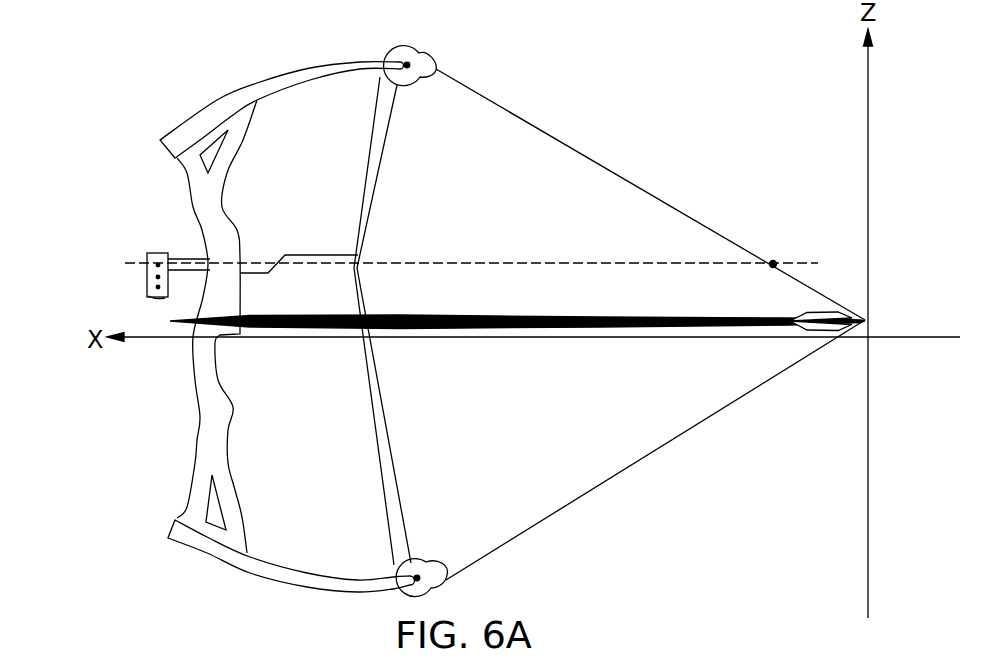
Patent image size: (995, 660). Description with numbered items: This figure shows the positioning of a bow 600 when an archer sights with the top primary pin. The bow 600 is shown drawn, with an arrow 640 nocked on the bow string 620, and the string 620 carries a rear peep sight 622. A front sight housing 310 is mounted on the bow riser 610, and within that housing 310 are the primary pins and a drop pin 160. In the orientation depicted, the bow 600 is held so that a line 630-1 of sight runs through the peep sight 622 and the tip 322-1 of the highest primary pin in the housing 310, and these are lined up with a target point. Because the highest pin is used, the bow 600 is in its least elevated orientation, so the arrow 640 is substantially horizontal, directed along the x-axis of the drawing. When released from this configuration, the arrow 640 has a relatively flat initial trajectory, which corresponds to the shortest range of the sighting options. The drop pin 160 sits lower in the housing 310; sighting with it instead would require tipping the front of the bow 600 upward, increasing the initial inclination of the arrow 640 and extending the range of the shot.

The bow 600 is at (743, 73).
The bow riser 610 is at (195, 207).
The bow string 620 is at (583, 153).
The rear peep sight 622 is at (773, 260).
The line of sight 630-1 is at (462, 263).
The arrow 640 is at (548, 317).
The front sight housing 310 is at (158, 253).
The tip of highest primary pin 322-1 is at (156, 265).
The drop pin 160 is at (165, 298).